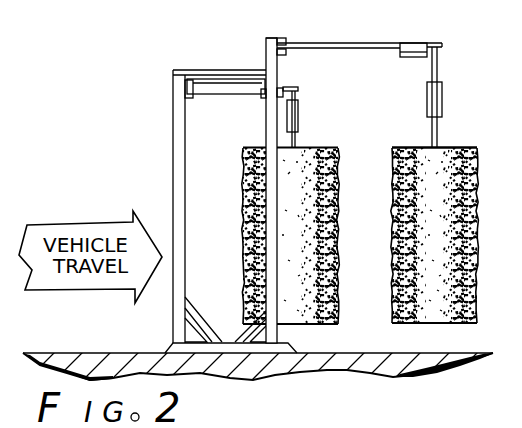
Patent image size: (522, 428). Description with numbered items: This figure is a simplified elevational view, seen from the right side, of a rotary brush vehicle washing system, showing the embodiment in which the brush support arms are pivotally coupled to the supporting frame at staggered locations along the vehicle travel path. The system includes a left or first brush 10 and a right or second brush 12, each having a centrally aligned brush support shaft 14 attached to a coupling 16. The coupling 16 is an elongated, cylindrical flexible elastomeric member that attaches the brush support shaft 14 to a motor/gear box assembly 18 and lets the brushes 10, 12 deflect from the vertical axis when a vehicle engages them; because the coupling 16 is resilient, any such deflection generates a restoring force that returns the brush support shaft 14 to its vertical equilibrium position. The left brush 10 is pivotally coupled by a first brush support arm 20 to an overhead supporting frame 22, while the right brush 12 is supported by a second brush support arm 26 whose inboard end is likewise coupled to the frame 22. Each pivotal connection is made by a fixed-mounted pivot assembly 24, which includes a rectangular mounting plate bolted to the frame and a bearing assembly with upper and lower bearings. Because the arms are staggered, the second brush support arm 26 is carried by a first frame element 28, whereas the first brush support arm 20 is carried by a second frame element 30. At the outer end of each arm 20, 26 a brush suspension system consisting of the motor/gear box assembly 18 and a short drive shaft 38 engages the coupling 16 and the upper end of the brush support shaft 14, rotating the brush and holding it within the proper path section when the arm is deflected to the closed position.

The left or first brush 10 is at (438, 200).
The right or second brush 12 is at (307, 199).
The brush support shaft 14 is at (432, 128).
The coupling 16 is at (428, 95).
The motor/gear box assembly 18 is at (427, 44).
The first brush support arm 20 is at (346, 44).
The supporting frame 22 is at (254, 60).
The pivot assembly 24 is at (283, 40).
The second brush support arm 26 is at (218, 94).
The first frame element 28 is at (173, 71).
The second frame element 30 is at (268, 39).
The short drive shaft 38 is at (438, 63).